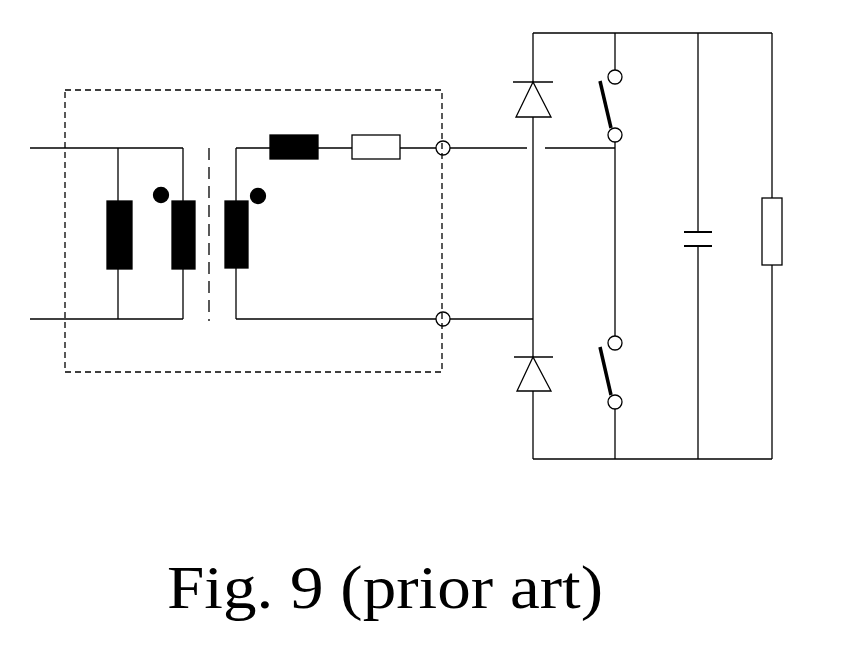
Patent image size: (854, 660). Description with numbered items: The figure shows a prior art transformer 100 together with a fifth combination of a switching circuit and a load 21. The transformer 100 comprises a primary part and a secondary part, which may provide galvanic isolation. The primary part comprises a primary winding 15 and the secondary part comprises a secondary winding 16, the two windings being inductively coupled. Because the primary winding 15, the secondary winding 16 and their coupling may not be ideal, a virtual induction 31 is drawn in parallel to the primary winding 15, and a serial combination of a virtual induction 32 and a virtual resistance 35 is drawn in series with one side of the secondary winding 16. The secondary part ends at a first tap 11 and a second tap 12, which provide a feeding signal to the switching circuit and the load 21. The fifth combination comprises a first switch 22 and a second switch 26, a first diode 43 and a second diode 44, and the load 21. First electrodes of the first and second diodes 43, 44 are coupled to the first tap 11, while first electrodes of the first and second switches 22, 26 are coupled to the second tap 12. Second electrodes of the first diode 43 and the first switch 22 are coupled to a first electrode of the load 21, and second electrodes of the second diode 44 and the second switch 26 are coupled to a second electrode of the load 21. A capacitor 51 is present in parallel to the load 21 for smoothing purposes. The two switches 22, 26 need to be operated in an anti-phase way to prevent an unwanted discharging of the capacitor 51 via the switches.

The transformer 100 is at (405, 372).
The virtual induction 31 is at (105, 233).
The primary winding 15 is at (173, 233).
The secondary winding 16 is at (254, 233).
The virtual induction 32 is at (294, 131).
The virtual resistance 35 is at (376, 131).
The second tap 12 is at (448, 143).
The first tap 11 is at (448, 324).
The second diode 44 is at (549, 99).
The first diode 43 is at (550, 374).
The second switch 26 is at (610, 111).
The first switch 22 is at (610, 372).
The capacitor 51 is at (700, 250).
The load 21 is at (782, 231).